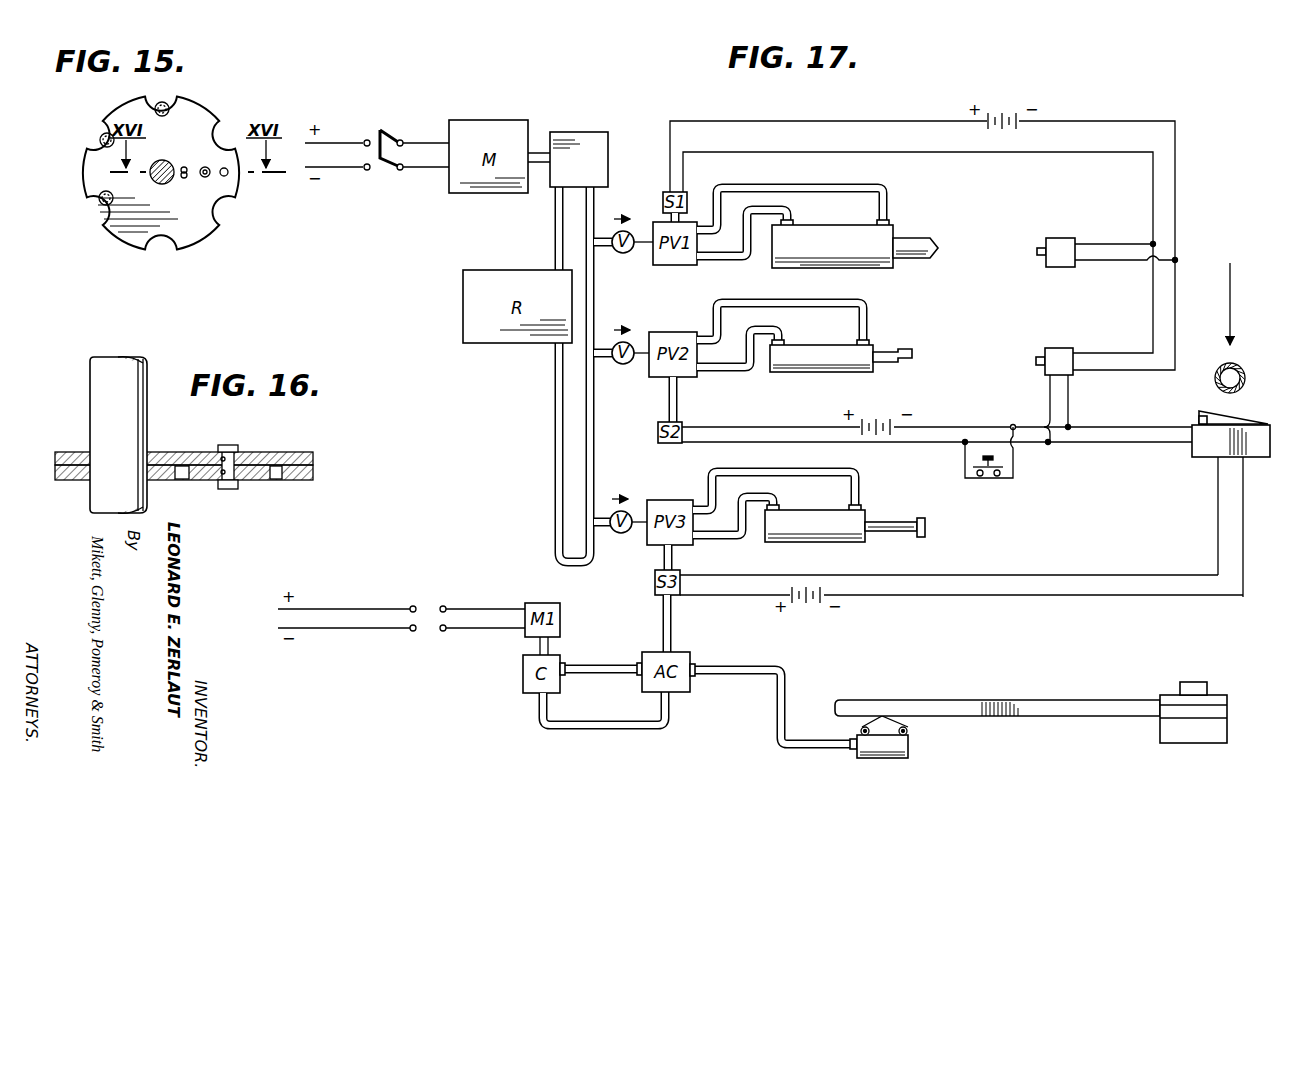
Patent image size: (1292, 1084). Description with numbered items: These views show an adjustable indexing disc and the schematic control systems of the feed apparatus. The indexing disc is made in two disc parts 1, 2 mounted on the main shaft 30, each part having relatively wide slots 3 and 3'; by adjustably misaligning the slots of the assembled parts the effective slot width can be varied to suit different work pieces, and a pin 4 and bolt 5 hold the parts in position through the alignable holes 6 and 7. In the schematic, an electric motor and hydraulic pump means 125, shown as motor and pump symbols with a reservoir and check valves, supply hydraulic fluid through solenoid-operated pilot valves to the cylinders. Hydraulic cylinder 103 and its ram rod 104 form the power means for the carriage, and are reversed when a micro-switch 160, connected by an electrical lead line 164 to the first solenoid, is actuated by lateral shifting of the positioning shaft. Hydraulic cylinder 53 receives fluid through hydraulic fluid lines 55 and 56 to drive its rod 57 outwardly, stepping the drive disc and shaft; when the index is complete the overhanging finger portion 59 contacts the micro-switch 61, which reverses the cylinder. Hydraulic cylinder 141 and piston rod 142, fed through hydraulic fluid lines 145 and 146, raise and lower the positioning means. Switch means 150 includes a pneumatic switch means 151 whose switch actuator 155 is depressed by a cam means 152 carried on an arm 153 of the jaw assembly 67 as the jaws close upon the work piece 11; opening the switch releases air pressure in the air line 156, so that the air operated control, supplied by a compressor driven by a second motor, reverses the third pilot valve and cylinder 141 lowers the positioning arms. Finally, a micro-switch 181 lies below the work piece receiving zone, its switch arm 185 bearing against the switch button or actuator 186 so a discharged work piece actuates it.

In FIG. 15, the disc part 1 is at (122, 225).
In FIG. 16, the disc part 1 is at (312, 478).
In FIG. 15, the disc part 2 is at (154, 248).
In FIG. 16, the disc part 2 is at (313, 456).
In FIG. 15, the slot 3 is at (232, 226).
In FIG. 15, the slot 3' is at (251, 200).
In FIG. 16, the pin 4 is at (236, 456).
In FIG. 15, the bolt 5 is at (200, 166).
In FIG. 16, the bolt 5 is at (235, 488).
In FIG. 16, the hole 6 is at (220, 480).
In FIG. 16, the hole 7 is at (222, 453).
In FIG. 15, the main shaft 30 is at (152, 184).
In FIG. 16, the main shaft 30 is at (100, 410).
In FIG. 17, the electric motor and hydraulic pump means 125 is at (547, 124).
In FIG. 17, the hydraulic cylinder 103 is at (860, 268).
In FIG. 17, the ram rod 104 is at (920, 241).
In FIG. 17, the hydraulic cylinder 53 is at (830, 372).
In FIG. 17, the hydraulic fluid line 55 is at (770, 328).
In FIG. 17, the hydraulic fluid line 56 is at (860, 303).
In FIG. 17, the rod 57 is at (880, 365).
In FIG. 17, the overhanging finger portion 59 is at (910, 352).
In FIG. 17, the micro-switch 160 is at (1068, 242).
In FIG. 17, the electrical lead line 164 is at (1175, 224).
In FIG. 17, the micro-switch 61 is at (1062, 350).
In FIG. 17, the work piece 11 is at (1238, 364).
In FIG. 17, the micro-switch 181 is at (1218, 458).
In FIG. 17, the switch arm 185 is at (1222, 412).
In FIG. 17, the switch button or actuator 186 is at (1198, 417).
In FIG. 17, the hydraulic cylinder 141 is at (827, 540).
In FIG. 17, the piston rod 142 is at (890, 520).
In FIG. 17, the hydraulic fluid line 145 is at (808, 470).
In FIG. 17, the hydraulic fluid line 146 is at (776, 500).
In FIG. 17, the switch means 150 is at (868, 754).
In FIG. 17, the air or pneumatic switch means 151 is at (902, 760).
In FIG. 17, the cam means 152 is at (852, 700).
In FIG. 17, the arm 153 is at (1060, 702).
In FIG. 17, the switch actuator 155 is at (900, 723).
In FIG. 17, the air line 156 is at (778, 733).
In FIG. 17, the jaw assembly 67 is at (1216, 696).